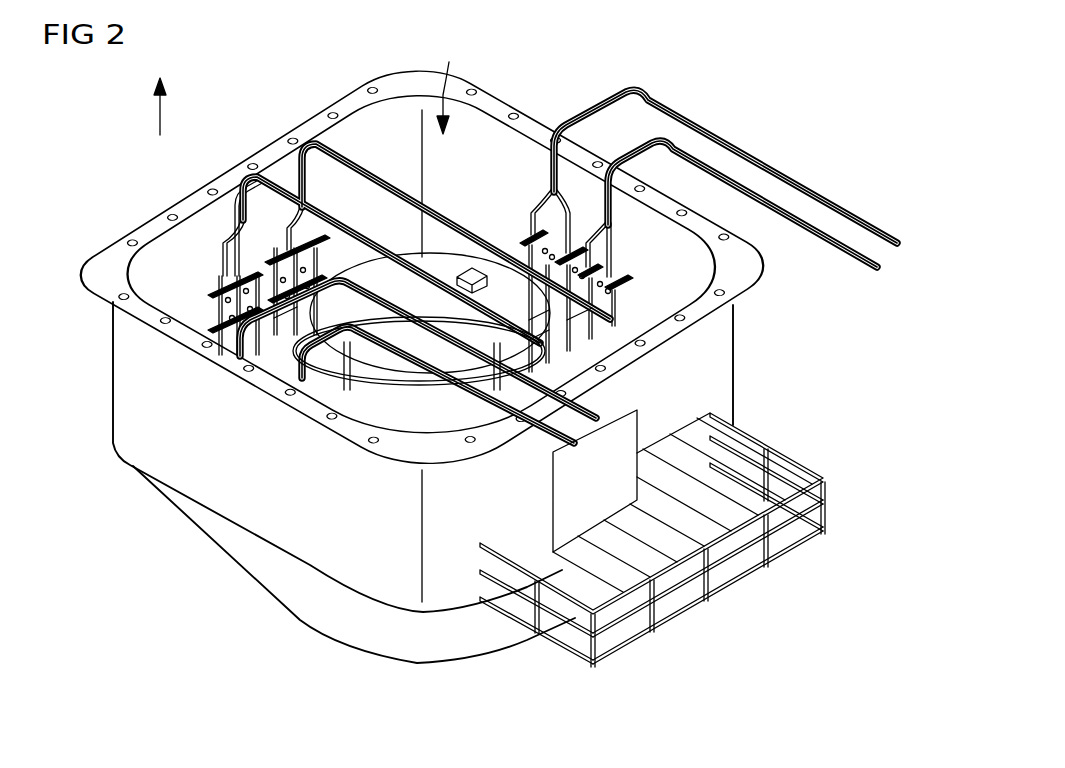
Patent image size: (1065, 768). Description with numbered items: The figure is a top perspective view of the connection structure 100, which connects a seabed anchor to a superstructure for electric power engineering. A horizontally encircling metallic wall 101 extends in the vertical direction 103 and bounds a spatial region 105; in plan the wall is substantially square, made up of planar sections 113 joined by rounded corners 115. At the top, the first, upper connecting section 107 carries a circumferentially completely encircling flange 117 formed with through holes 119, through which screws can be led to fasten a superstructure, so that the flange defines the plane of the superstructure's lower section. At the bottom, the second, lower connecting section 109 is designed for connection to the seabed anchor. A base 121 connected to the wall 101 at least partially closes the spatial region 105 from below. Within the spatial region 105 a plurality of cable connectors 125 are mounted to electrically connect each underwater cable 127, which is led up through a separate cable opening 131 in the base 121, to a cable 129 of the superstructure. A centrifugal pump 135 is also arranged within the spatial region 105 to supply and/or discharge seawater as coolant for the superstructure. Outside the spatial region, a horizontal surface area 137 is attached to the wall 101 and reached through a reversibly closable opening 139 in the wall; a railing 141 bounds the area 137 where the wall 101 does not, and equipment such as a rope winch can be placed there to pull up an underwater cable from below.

The connection structure 100 is at (806, 84).
The encircling metallic wall 101 is at (539, 90).
The vertical direction 103 is at (170, 118).
The spatial region 105 is at (451, 84).
The first, upper connecting section 107 is at (99, 228).
The second, lower connecting section 109 is at (192, 546).
The planar sections 113 is at (736, 378).
The rounded corners 115 is at (407, 598).
The flange 117 is at (100, 292).
The through holes 119 is at (166, 330).
The base 121 is at (433, 256).
The cable connectors 125 is at (198, 302).
The underwater cable 127 is at (338, 386).
The cable of the superstructure 129 is at (235, 216).
The cable openings 131 is at (300, 348).
The centrifugal pump 135 is at (482, 262).
The horizontal surface area 137 is at (800, 545).
The closable opening 139 is at (553, 500).
The railing 141 is at (830, 505).